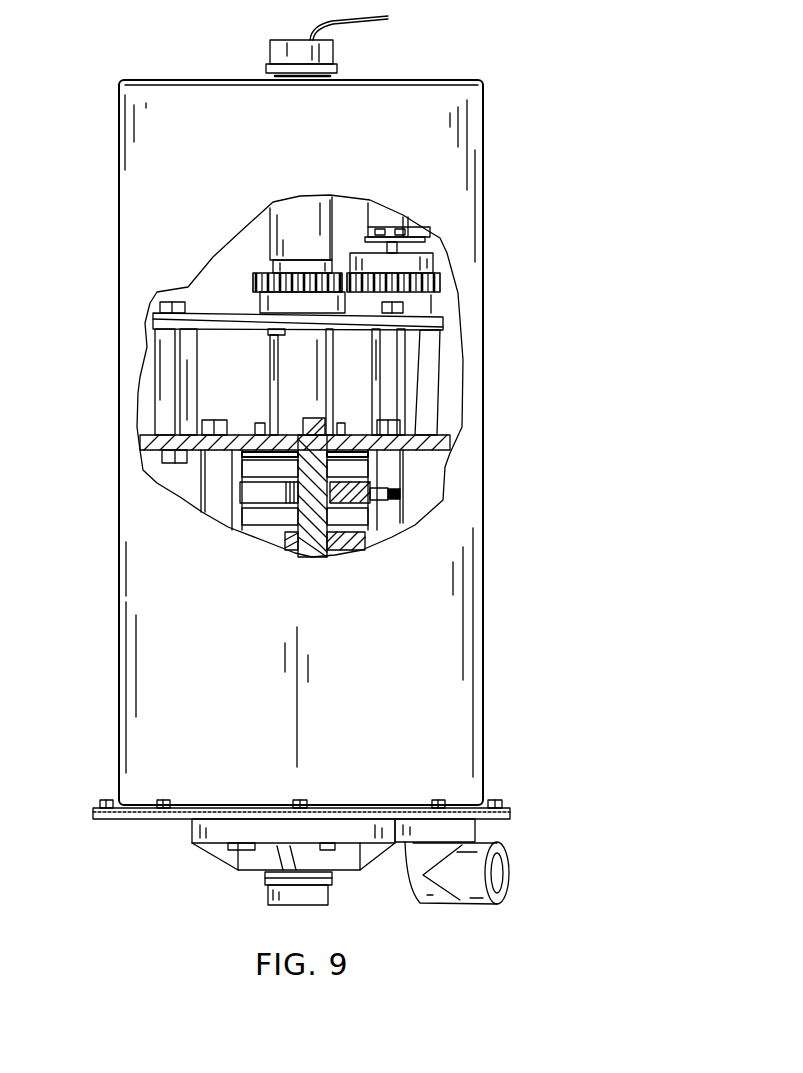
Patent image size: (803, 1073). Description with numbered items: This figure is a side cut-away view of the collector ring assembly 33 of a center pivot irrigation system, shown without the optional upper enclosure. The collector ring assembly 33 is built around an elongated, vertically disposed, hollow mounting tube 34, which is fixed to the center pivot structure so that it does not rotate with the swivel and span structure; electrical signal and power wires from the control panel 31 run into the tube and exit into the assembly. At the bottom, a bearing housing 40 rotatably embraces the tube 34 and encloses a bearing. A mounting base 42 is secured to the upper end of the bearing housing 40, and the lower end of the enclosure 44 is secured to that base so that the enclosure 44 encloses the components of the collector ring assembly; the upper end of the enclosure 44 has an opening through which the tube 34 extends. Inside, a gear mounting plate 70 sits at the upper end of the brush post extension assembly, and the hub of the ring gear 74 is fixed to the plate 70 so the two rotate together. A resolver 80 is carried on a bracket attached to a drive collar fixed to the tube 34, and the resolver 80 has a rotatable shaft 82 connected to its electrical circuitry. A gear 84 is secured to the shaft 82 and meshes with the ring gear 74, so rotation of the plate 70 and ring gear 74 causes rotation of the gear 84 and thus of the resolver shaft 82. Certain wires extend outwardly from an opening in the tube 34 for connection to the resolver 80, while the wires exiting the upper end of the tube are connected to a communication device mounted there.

The control panel 31 is at (348, 22).
The collector ring assembly 33 is at (542, 271).
The mounting tube 34 is at (283, 227).
The bearing housing 40 is at (212, 848).
The mounting base 42 is at (510, 819).
The enclosure 44 is at (467, 482).
The gear mounting plate 70 is at (143, 317).
The ring gear 74 is at (253, 282).
The resolver 80 is at (387, 212).
The rotatable shaft 82 is at (432, 245).
The gear 84 is at (440, 288).